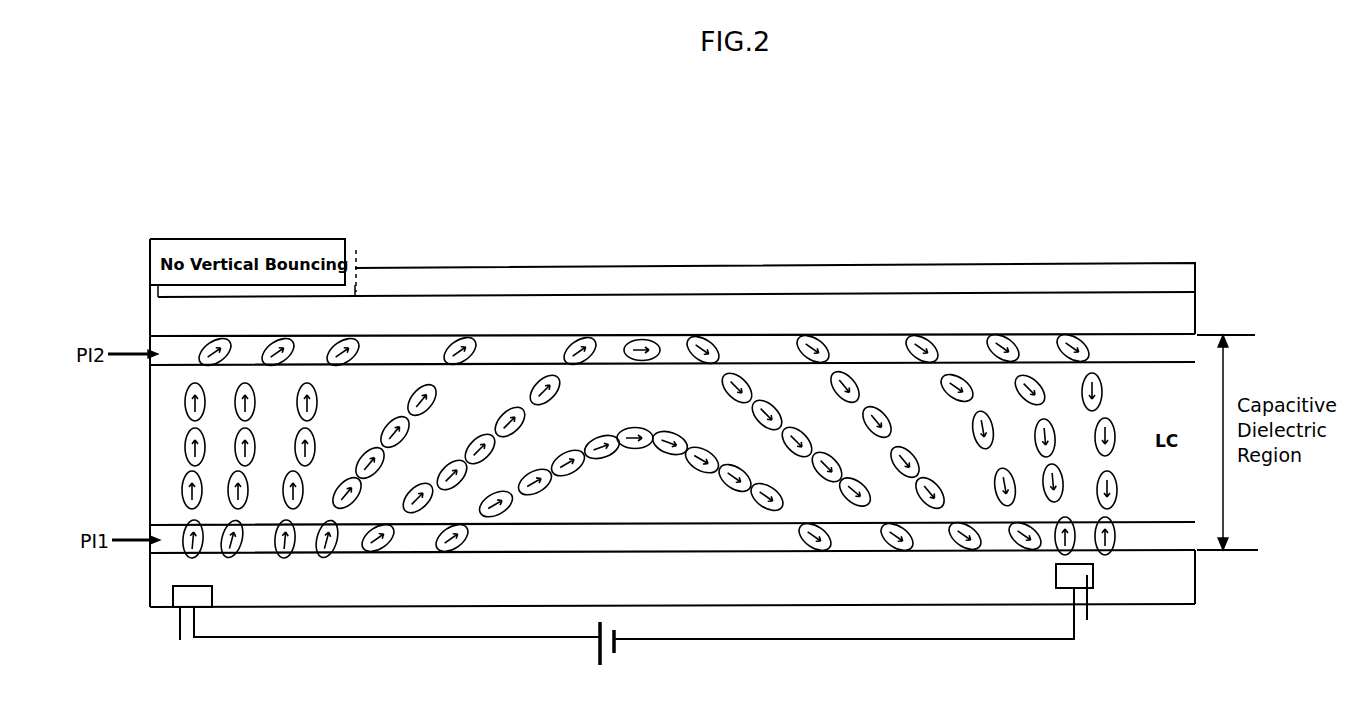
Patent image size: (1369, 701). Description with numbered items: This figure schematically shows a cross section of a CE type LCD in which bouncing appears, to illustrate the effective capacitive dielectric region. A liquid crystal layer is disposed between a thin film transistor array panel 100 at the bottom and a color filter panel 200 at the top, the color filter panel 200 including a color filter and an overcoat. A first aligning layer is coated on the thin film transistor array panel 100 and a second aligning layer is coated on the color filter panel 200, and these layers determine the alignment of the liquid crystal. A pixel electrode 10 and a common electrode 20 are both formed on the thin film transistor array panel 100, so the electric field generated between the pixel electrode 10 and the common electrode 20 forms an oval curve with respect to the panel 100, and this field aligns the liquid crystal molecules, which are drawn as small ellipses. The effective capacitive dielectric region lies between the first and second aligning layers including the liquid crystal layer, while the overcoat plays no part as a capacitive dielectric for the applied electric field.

The pixel electrode 10 is at (863, 610).
The common electrode 20 is at (385, 630).
The TFT array panel 100 is at (1200, 583).
The color filter panel 200 is at (1203, 263).